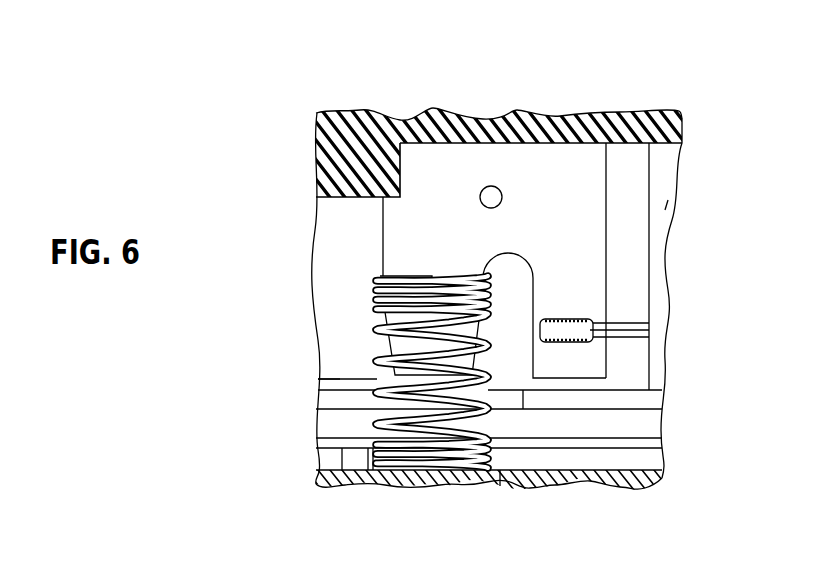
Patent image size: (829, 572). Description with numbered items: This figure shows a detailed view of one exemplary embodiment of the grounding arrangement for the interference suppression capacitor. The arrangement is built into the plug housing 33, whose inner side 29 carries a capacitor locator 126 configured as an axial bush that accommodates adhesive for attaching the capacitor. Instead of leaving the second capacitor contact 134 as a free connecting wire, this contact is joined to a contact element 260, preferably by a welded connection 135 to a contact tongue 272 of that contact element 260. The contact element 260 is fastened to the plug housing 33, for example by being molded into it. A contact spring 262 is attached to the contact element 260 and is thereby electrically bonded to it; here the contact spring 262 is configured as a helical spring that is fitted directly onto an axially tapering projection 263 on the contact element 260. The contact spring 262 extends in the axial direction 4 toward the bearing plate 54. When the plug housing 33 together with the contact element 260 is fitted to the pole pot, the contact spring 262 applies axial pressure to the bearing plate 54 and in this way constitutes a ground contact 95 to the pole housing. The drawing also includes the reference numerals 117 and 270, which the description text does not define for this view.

The axial direction 4 is at (409, 82).
The inner side 29 is at (632, 154).
The plug housing 33 is at (345, 360).
The bearing plate 54 is at (632, 478).
The ground contact 95 is at (455, 480).
The shoulder block 117 is at (352, 157).
The capacitor locator 126 is at (664, 204).
The second capacitor contact 134 is at (613, 328).
The welded connection 135 is at (570, 345).
The contact element 260 is at (540, 178).
The contact spring 262 is at (378, 390).
The axially tapering projection 263 is at (370, 318).
The pivot 270 is at (483, 205).
The contact tongue 272 is at (573, 240).